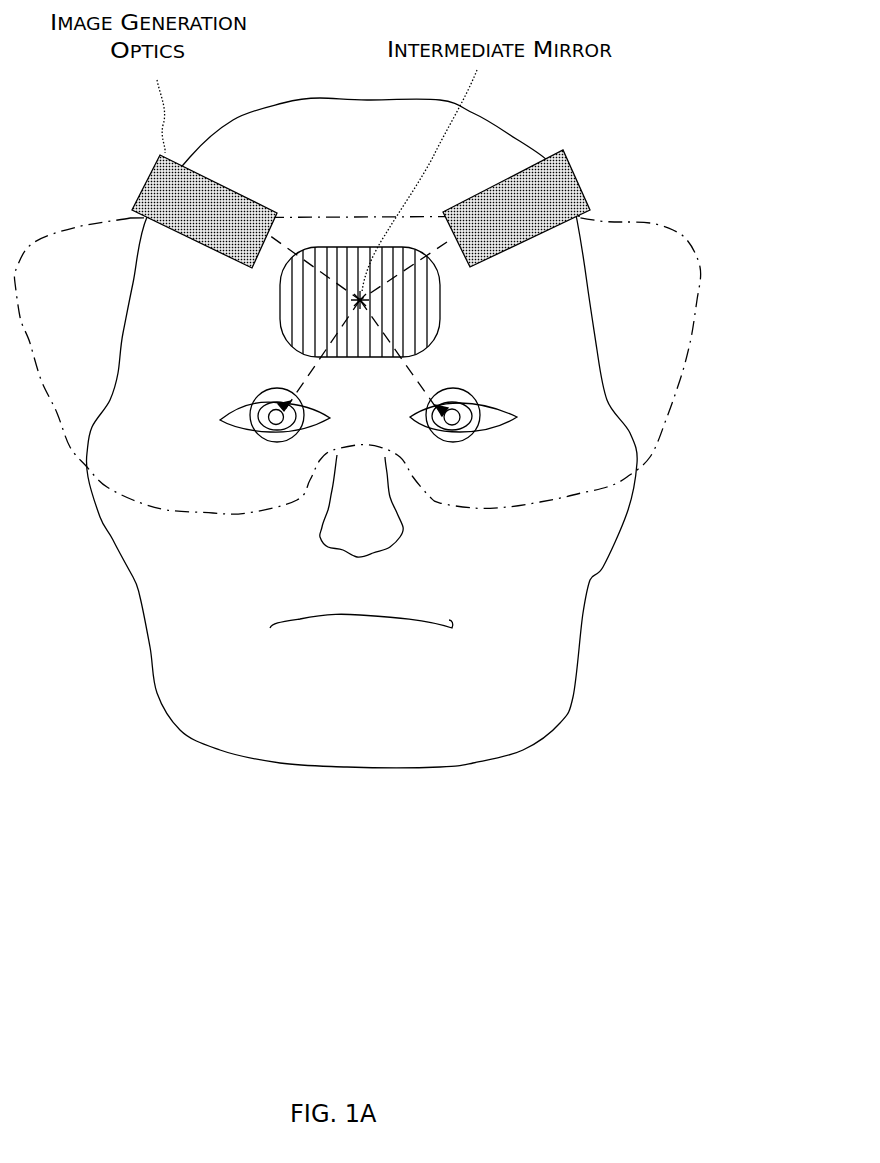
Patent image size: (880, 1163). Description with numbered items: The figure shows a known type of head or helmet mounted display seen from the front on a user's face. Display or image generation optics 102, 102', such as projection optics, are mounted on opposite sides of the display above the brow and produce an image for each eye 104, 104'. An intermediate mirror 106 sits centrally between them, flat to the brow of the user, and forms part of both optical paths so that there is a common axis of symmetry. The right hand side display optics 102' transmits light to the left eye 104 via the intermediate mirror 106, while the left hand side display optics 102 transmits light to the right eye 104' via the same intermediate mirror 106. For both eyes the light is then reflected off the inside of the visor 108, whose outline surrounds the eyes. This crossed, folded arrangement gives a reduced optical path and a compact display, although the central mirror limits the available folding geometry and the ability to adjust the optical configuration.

The display optics 102 is at (516, 206).
The display optics 102' is at (205, 201).
The eye 104 is at (491, 408).
The eye 104' is at (263, 399).
The intermediate mirror 106 is at (427, 318).
The visor 108 is at (648, 240).